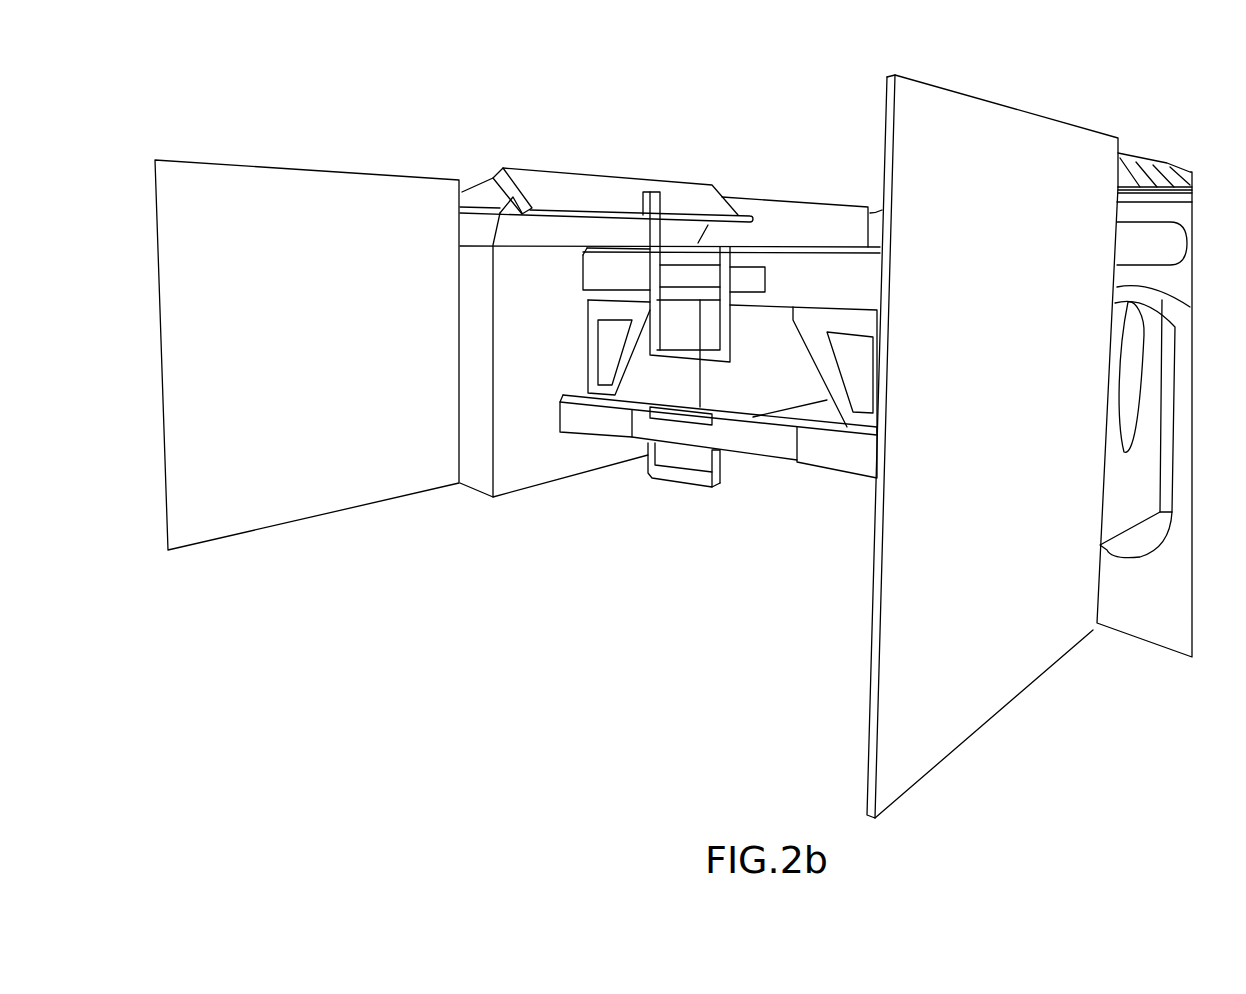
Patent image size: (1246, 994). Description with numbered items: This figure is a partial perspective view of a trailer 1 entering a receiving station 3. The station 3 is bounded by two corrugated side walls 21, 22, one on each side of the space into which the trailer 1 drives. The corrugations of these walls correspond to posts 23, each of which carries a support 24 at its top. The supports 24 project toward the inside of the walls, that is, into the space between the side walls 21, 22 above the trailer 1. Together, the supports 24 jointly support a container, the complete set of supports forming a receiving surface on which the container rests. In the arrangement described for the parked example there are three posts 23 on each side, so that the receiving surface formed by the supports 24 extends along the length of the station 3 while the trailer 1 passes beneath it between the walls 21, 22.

The trailer 1 is at (775, 450).
The station 3 is at (610, 615).
The side wall 21 is at (293, 503).
The side wall 22 is at (871, 660).
The post 23 is at (533, 468).
The support 24 is at (720, 197).